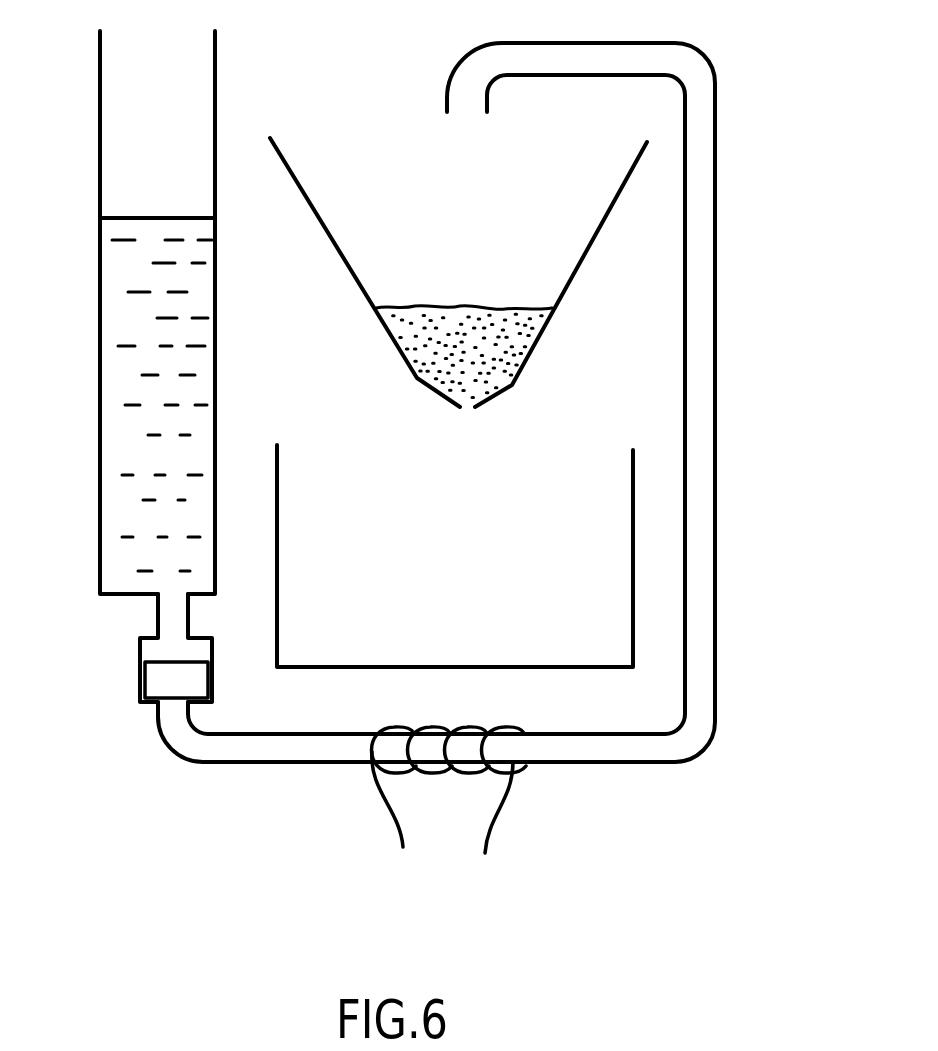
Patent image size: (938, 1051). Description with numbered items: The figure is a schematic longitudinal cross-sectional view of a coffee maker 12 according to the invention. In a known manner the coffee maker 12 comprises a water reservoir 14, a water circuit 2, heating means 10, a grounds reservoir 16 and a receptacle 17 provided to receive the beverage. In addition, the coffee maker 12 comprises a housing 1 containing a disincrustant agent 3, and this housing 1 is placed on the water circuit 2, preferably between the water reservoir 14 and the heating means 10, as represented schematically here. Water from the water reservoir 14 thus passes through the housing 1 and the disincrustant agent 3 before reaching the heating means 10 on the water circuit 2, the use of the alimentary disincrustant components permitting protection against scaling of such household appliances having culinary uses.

The housing 1 is at (155, 650).
The water circuit 2 is at (267, 748).
The disincrustant agent 3 is at (157, 680).
The heating means 10 is at (440, 776).
The coffee maker 12 is at (747, 218).
The water reservoir 14 is at (135, 448).
The grounds reservoir 16 is at (473, 358).
The receptacle 17 is at (360, 487).